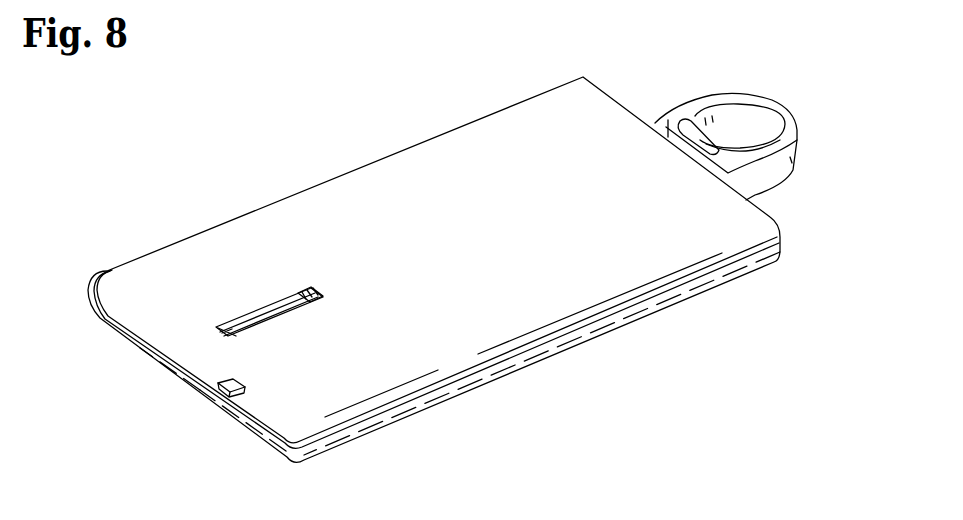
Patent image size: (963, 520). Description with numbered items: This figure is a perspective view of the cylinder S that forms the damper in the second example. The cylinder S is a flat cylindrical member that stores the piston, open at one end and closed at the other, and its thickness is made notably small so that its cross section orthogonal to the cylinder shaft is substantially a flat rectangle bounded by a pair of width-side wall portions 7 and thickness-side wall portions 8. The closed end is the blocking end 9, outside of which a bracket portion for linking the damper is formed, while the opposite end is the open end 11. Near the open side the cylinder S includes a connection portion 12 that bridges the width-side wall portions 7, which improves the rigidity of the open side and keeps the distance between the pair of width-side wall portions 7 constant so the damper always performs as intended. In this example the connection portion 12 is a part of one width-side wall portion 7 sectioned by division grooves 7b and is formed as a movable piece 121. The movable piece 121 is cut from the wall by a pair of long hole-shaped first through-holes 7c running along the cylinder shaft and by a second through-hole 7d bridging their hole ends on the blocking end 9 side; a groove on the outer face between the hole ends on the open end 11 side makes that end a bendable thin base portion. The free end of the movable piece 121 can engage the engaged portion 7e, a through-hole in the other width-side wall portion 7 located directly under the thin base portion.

The cylinder S is at (406, 151).
The width-side wall portion 7 is at (347, 188).
The division groove 7b is at (261, 280).
The first through-hole 7c is at (250, 312).
The second through-hole 7d is at (316, 295).
The engaged portion 7e is at (222, 393).
The thickness-side wall portion 8 is at (92, 276).
The blocking end 9 is at (779, 236).
The open end 11 is at (180, 365).
The connection portion 12 is at (247, 240).
The movable piece 121 is at (248, 314).